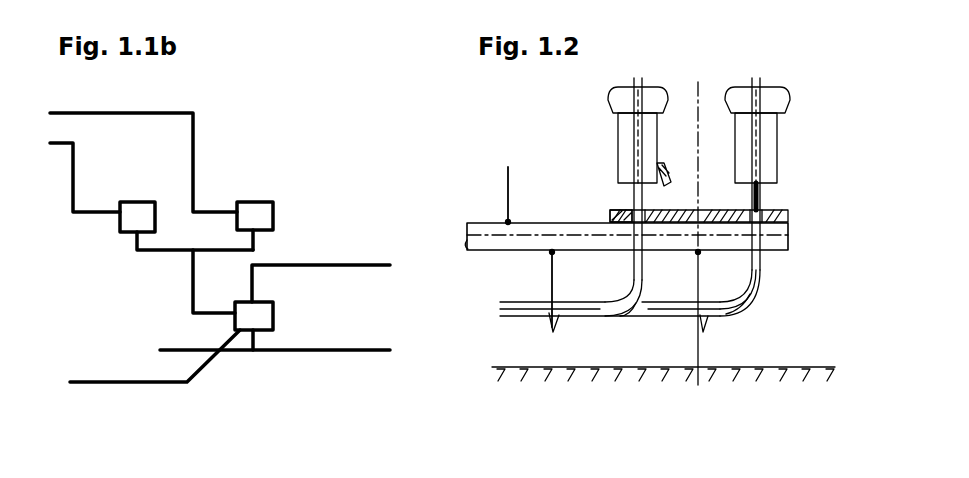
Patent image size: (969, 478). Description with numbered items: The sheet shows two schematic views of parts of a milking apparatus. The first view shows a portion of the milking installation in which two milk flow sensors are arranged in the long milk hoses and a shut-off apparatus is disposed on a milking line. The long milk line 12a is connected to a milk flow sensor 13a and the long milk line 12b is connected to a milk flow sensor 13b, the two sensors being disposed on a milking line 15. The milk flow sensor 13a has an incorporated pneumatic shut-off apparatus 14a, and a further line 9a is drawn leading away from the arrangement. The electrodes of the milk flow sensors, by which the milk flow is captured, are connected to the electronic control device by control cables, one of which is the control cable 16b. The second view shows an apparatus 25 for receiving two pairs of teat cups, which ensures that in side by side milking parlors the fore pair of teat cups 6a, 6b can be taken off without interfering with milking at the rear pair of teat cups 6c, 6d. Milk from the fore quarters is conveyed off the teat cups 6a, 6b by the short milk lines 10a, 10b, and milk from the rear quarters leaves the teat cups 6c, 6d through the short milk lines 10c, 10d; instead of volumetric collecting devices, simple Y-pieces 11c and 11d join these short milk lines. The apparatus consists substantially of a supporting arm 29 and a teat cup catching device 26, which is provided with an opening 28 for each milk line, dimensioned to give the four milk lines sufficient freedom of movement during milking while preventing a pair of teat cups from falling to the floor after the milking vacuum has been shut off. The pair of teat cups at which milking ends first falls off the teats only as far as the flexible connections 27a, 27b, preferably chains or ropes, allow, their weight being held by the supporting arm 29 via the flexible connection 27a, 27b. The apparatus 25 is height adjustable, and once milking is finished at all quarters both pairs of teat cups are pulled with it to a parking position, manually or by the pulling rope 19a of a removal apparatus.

In FIG. 1.1b, the long milk line 12a is at (102, 217).
In FIG. 1.1b, the long milk line 12b is at (173, 101).
In FIG. 1.1b, the milk flow sensor 13a is at (119, 207).
In FIG. 1.1b, the milk flow sensor 13b is at (268, 215).
In FIG. 1.1b, the pneumatic shut-off apparatus 14a is at (268, 313).
In FIG. 1.1b, the output line 9a is at (365, 252).
In FIG. 1.1b, the milking line 15 is at (380, 338).
In FIG. 1.1b, the control cable 16b is at (203, 367).
In FIG. 1.2, the apparatus for receiving two pairs of teat cups 25 is at (556, 141).
In FIG. 1.2, the pulling rope 19a is at (513, 207).
In FIG. 1.2, the teat cup catching device 26 is at (785, 215).
In FIG. 1.2, the opening 28 is at (627, 215).
In FIG. 1.2, the supporting arm 29 is at (783, 236).
In FIG. 1.2, the teat cup 6a is at (643, 97).
In FIG. 1.2, the teat cup 6b is at (646, 121).
In FIG. 1.2, the teat cup 6c is at (743, 95).
In FIG. 1.2, the teat cup 6d is at (758, 120).
In FIG. 1.2, the short milk line 10a is at (641, 284).
In FIG. 1.2, the short milk line 10b is at (610, 295).
In FIG. 1.2, the short milk line 10c is at (762, 273).
In FIG. 1.2, the short milk line 10d is at (767, 293).
In FIG. 1.2, the Y-piece 11c is at (608, 316).
In FIG. 1.2, the Y-piece 11d is at (735, 308).
In FIG. 1.2, the flexible connection 27a is at (590, 288).
In FIG. 1.2, the flexible connection 27b is at (705, 295).